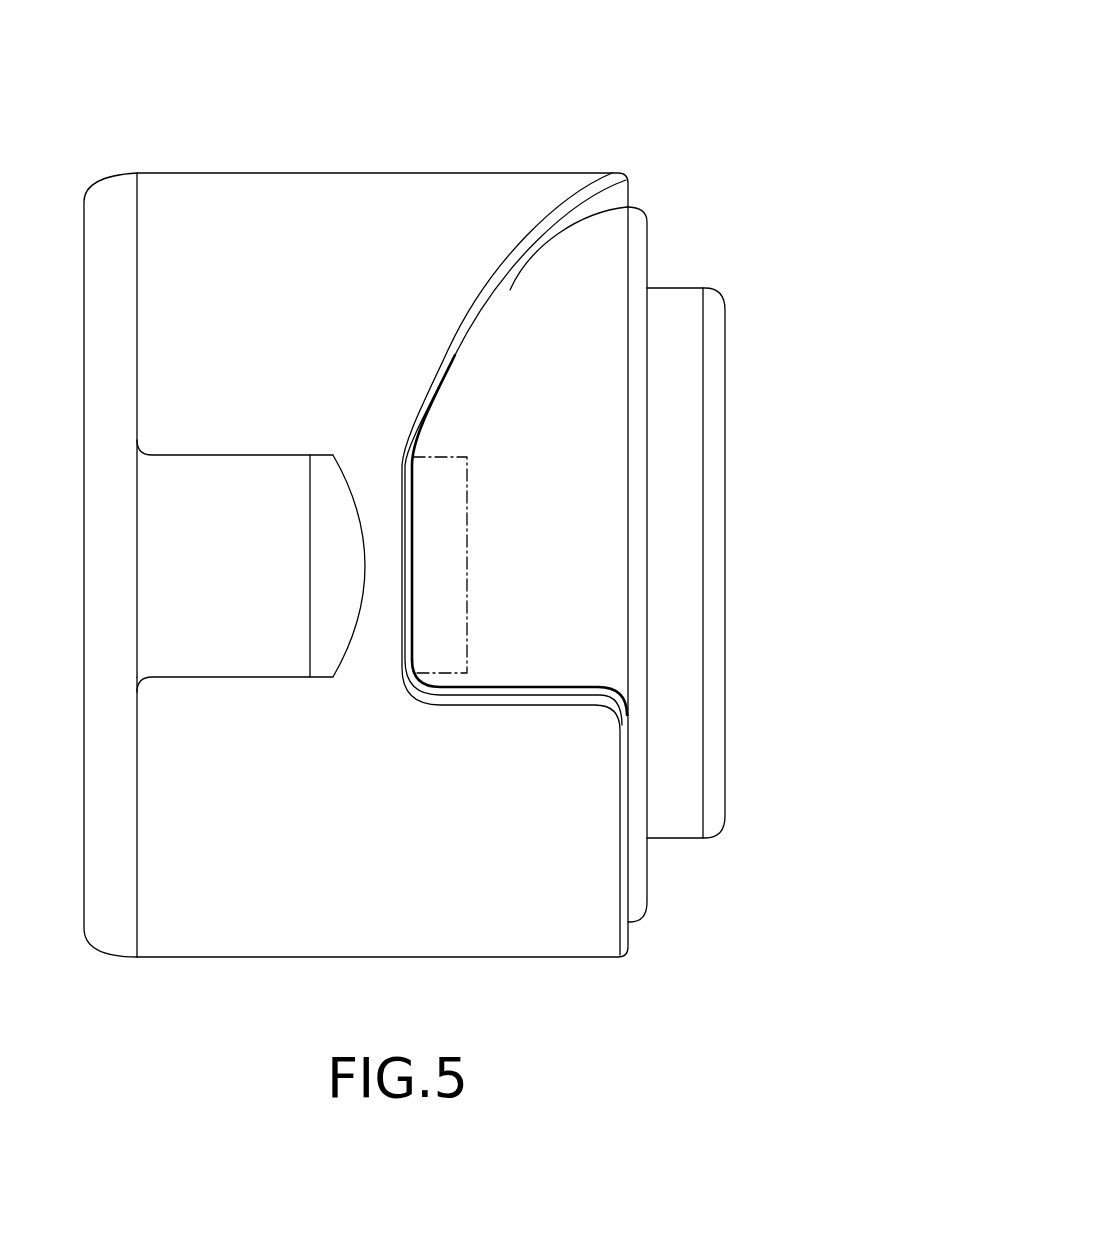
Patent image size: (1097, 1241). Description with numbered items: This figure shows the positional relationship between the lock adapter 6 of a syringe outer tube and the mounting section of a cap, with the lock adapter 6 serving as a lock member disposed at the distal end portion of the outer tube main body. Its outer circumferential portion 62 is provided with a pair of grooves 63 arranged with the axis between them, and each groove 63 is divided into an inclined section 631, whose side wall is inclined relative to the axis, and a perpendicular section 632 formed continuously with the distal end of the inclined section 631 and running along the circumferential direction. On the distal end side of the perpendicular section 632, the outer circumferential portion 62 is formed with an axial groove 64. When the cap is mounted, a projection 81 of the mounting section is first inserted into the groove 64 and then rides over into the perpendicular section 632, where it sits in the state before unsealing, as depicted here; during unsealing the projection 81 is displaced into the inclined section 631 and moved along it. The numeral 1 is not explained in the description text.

The image display apparatus 1 is at (468, 520).
The lock adapter 6 is at (345, 172).
The outer circumferential portion 62 is at (335, 928).
The groove 63 is at (583, 245).
The groove 64 is at (235, 500).
The inclined section 631 is at (512, 291).
The perpendicular section 632 is at (418, 600).
The projection 81 is at (472, 489).